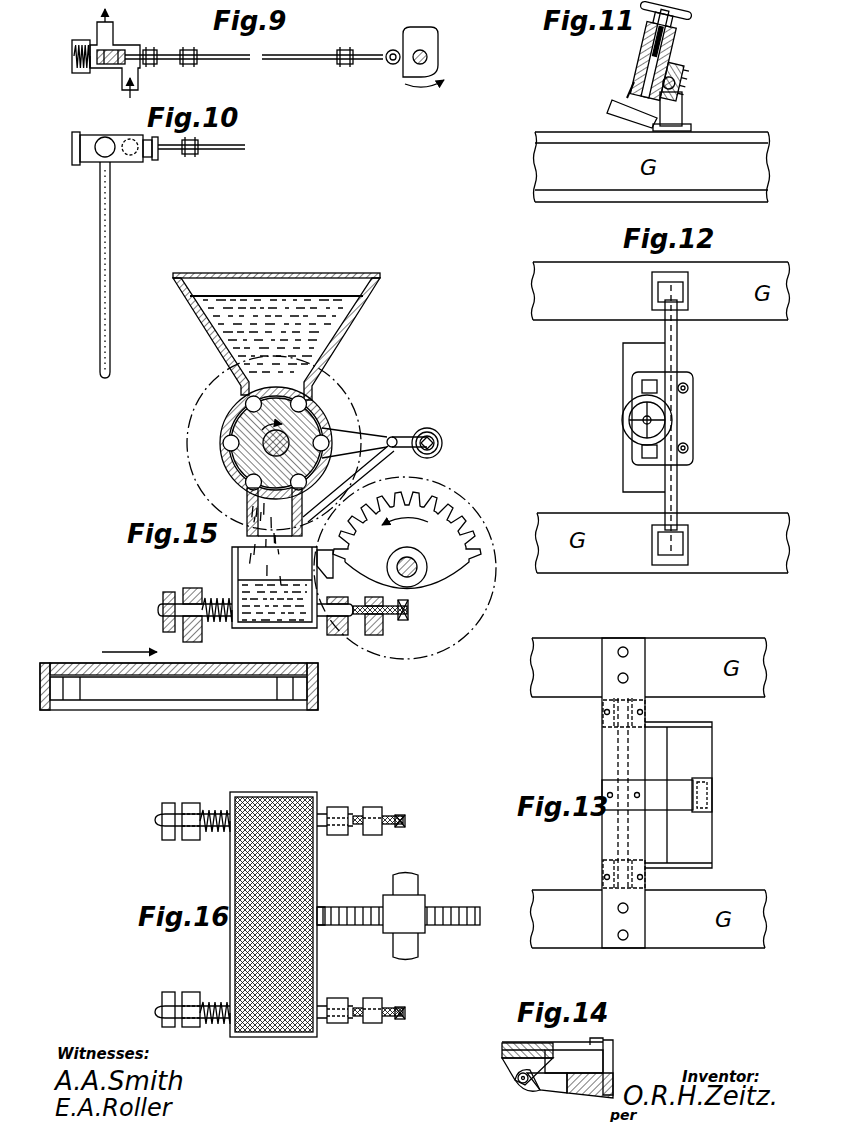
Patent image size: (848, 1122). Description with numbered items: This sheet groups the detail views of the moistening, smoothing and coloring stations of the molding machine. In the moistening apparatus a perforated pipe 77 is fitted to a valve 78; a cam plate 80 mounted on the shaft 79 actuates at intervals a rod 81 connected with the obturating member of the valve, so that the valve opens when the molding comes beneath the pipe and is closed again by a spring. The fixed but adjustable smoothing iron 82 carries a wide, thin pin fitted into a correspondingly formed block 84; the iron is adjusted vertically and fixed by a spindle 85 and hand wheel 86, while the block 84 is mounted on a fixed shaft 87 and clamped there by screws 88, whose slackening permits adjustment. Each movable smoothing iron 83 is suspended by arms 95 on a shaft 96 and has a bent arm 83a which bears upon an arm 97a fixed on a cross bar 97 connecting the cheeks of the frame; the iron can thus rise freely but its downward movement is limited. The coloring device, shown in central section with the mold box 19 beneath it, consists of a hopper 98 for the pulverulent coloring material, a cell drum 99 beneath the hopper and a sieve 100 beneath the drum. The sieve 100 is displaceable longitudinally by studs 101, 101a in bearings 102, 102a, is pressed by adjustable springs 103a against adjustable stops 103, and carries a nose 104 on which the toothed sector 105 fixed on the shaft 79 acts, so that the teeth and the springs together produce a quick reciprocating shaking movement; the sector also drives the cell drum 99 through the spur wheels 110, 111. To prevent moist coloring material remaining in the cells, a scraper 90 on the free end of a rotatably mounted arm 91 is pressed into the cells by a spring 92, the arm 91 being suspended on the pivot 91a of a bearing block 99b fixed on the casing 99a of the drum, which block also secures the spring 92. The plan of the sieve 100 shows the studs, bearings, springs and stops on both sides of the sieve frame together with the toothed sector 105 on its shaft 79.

In FIG. 9, the perforated pipe 77 is at (99, 31).
In FIG. 10, the perforated pipe 77 is at (100, 272).
In FIG. 9, the valve 78 is at (124, 52).
In FIG. 10, the valve 78 is at (95, 138).
In FIG. 9, the shaft 79 is at (427, 57).
In FIG. 15, the shaft 79 is at (412, 572).
In FIG. 16, the shaft 79 is at (410, 886).
In FIG. 9, the cam plate 80 is at (420, 52).
In FIG. 9, the rod 81 is at (312, 55).
In FIG. 10, the rod 81 is at (226, 149).
In FIG. 11, the fixed smoothing iron 82 is at (612, 107).
In FIG. 12, the fixed smoothing iron 82 is at (630, 354).
In FIG. 11, the movable smoothing iron 83 is at (627, 98).
In FIG. 12, the movable smoothing iron 83 is at (644, 387).
In FIG. 13, the movable smoothing iron 83 is at (697, 842).
In FIG. 14, the movable smoothing iron 83 is at (593, 1096).
In FIG. 13, the bent arm 83a is at (700, 794).
In FIG. 14, the bent arm 83a is at (603, 1040).
In FIG. 11, the block 84 is at (630, 62).
In FIG. 12, the block 84 is at (644, 451).
In FIG. 11, the spindle 85 is at (643, 43).
In FIG. 12, the spindle 85 is at (651, 418).
In FIG. 11, the hand wheel 86 is at (672, 10).
In FIG. 12, the hand wheel 86 is at (622, 421).
In FIG. 11, the fixed shaft 87 is at (668, 72).
In FIG. 12, the fixed shaft 87 is at (677, 331).
In FIG. 11, the screws 88 is at (676, 66).
In FIG. 12, the screws 88 is at (688, 387).
In FIG. 15, the scraper 90 is at (258, 500).
In FIG. 15, the arm 91 is at (347, 477).
In FIG. 15, the pivot 91a is at (400, 431).
In FIG. 15, the spring 92 is at (400, 448).
In FIG. 14, the arms 95 is at (547, 1090).
In FIG. 13, the shaft 96 is at (618, 742).
In FIG. 14, the shaft 96 is at (516, 1081).
In FIG. 13, the cross bar 97 is at (608, 845).
In FIG. 14, the cross bar 97 is at (503, 1050).
In FIG. 13, the fixed arm 97a is at (658, 793).
In FIG. 14, the fixed arm 97a is at (553, 1050).
In FIG. 15, the hopper 98 is at (340, 343).
In FIG. 15, the cell drum 99 is at (313, 426).
In FIG. 15, the casing 99a is at (227, 437).
In FIG. 15, the bearing block 99b is at (354, 443).
In FIG. 15, the sieve 100 is at (248, 566).
In FIG. 16, the sieve 100 is at (248, 866).
In FIG. 15, the stud 101 is at (322, 620).
In FIG. 16, the stud 101 is at (322, 812).
In FIG. 15, the stud 101a is at (158, 610).
In FIG. 16, the stud 101a is at (155, 820).
In FIG. 15, the bearing 102 is at (343, 635).
In FIG. 16, the bearing 102 is at (337, 835).
In FIG. 15, the bearing 102a is at (190, 592).
In FIG. 16, the bearing 102a is at (190, 803).
In FIG. 15, the stop 103 is at (393, 620).
In FIG. 16, the stop 103 is at (395, 815).
In FIG. 15, the adjustable spring 103a is at (213, 622).
In FIG. 16, the adjustable spring 103a is at (214, 832).
In FIG. 15, the nose 104 is at (328, 570).
In FIG. 16, the nose 104 is at (326, 910).
In FIG. 15, the toothed sector 105 is at (407, 540).
In FIG. 16, the toothed sector 105 is at (450, 925).
In FIG. 15, the spur wheel 110 is at (452, 486).
In FIG. 15, the spur wheel 111 is at (340, 377).
In FIG. 15, the mold box 19 is at (179, 681).